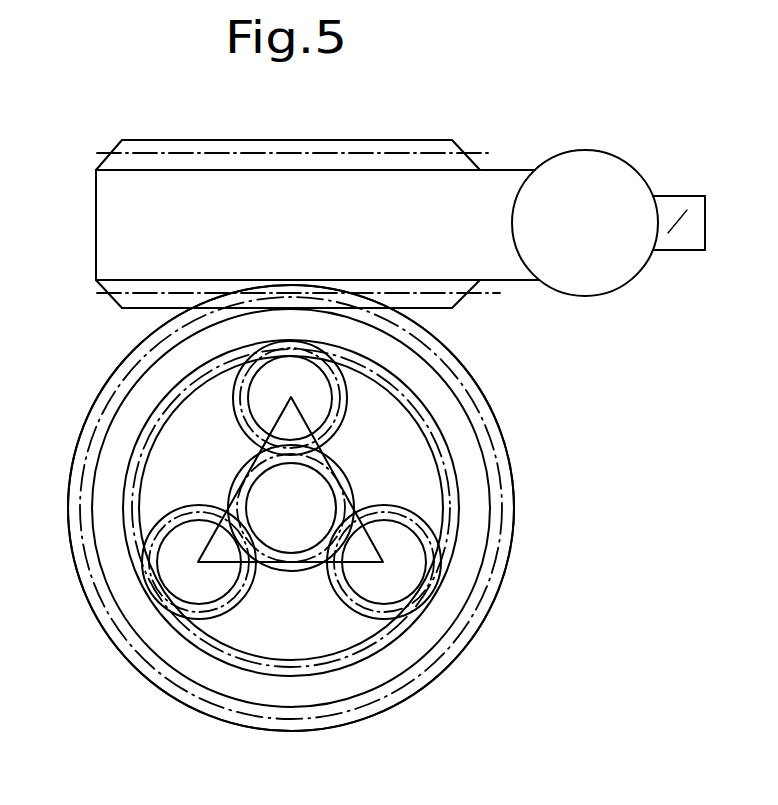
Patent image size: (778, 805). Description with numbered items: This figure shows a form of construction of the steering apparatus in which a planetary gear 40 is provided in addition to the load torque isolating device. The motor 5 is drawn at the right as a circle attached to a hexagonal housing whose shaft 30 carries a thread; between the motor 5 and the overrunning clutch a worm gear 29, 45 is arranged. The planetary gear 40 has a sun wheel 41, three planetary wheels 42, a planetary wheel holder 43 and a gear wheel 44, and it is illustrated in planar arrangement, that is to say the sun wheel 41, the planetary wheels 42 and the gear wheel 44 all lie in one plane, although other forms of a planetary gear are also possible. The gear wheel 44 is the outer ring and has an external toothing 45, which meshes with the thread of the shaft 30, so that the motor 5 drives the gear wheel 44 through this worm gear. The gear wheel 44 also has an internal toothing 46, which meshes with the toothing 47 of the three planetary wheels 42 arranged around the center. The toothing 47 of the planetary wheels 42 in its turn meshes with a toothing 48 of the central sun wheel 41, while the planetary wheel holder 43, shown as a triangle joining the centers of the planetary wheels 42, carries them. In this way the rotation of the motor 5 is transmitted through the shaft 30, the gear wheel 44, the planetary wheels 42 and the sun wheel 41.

The motor 5 is at (618, 178).
The worm gear 29 is at (122, 298).
The shaft 30 is at (95, 263).
The planetary gear 40 is at (128, 685).
The sun wheel 41 is at (282, 492).
The planetary wheels 42 is at (228, 400).
The planetary wheel holder 43 is at (233, 513).
The gear wheel 44 is at (465, 410).
The external toothing 45 is at (508, 483).
The internal toothing 46 is at (457, 517).
The toothing of the planetary wheels 47 is at (355, 612).
The toothing of the sun wheel 48 is at (250, 458).